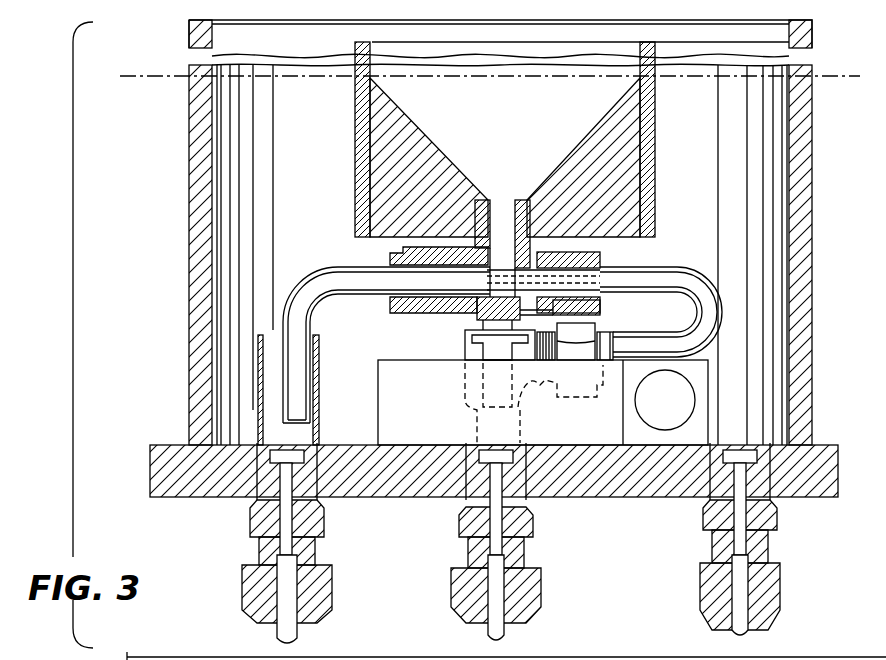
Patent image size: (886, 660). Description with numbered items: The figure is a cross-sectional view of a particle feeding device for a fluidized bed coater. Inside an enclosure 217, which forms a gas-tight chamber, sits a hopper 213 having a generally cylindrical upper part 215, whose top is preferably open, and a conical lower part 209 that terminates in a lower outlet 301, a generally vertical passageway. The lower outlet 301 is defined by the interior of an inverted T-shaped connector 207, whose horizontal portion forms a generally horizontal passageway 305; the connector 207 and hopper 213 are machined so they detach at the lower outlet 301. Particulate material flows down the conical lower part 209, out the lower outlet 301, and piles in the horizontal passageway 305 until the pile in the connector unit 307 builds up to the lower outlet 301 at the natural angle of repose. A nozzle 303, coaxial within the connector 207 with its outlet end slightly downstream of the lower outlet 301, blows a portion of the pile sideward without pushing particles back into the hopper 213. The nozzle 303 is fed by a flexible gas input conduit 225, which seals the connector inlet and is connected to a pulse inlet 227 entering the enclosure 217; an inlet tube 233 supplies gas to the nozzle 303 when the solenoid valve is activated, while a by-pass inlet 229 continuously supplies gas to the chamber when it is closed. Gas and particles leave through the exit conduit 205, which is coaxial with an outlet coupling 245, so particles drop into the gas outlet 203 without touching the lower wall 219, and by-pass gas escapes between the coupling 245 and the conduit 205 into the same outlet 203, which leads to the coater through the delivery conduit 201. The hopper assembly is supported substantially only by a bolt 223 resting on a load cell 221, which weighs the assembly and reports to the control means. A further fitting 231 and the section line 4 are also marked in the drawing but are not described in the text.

The section line 4- 4 is at (862, 55).
The delivery conduit 201 is at (282, 630).
The gas outlet 203 is at (252, 525).
The exit conduit 205 is at (287, 297).
The T-shaped connector 207 is at (394, 313).
The conical lower part 209 is at (410, 118).
The hopper 213 is at (650, 102).
The upper part 215 is at (377, 33).
The enclosure 217 is at (190, 205).
The lower wall 219 is at (340, 443).
The load cell 221 is at (378, 377).
The bolt 223 is at (470, 387).
The flexible gas input conduit 225 is at (693, 285).
The pulse inlet 227 is at (462, 525).
The by-pass inlet 229 is at (777, 524).
The outlet tube 231 is at (755, 630).
The inlet tube 233 is at (488, 630).
The outlet coupling 245 is at (253, 410).
The lower outlet 301 is at (490, 213).
The nozzle 303 is at (462, 315).
The generally horizontal passageway 305 is at (473, 282).
The connector unit 307 is at (622, 322).